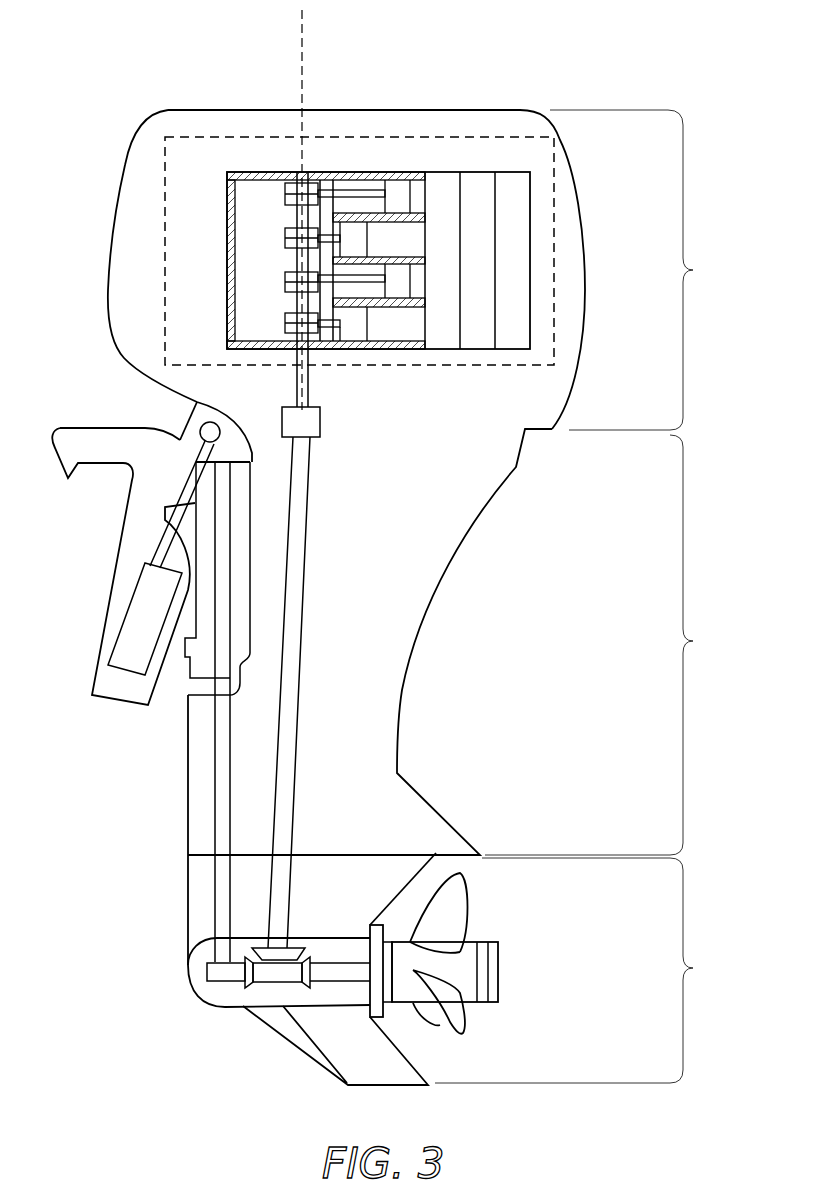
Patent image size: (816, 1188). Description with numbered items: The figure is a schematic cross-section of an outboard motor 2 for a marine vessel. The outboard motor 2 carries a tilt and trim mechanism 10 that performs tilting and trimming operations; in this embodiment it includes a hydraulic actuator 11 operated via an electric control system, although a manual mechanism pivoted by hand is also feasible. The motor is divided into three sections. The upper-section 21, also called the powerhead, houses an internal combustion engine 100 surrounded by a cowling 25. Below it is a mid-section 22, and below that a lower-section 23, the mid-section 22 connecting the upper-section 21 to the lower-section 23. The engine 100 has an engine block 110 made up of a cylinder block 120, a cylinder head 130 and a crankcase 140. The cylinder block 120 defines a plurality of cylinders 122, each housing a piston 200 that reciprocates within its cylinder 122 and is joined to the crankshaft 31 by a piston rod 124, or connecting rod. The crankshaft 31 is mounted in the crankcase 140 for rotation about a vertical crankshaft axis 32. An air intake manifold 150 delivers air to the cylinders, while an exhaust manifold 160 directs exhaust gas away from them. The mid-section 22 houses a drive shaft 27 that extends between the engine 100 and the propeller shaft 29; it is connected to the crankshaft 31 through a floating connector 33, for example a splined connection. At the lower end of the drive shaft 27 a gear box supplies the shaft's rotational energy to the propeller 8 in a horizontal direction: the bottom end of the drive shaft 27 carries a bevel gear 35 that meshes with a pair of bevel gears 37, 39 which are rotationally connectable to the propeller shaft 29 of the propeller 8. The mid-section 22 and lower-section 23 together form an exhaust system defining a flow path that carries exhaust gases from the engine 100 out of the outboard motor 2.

The outboard motor 2 is at (155, 82).
The propeller 8 is at (467, 972).
The tilt and trim mechanism 10 is at (103, 561).
The hydraulic actuator 11 is at (132, 645).
The upper-section 21 is at (416, 270).
The mid-section 22 is at (456, 642).
The lower-section 23 is at (456, 890).
The cowling 25 is at (582, 192).
The drive shaft 27 is at (303, 590).
The propeller shaft 29 is at (337, 976).
The crankshaft 31 is at (303, 390).
The vertical crankshaft axis 32 is at (303, 20).
The floating connector 33 is at (320, 420).
The bevel gear 35 is at (275, 955).
The bevel gear 37 is at (252, 978).
The bevel gear 39 is at (308, 972).
The internal combustion engine 100 is at (165, 165).
The engine block 110 is at (404, 152).
The cylinder block 120 is at (400, 347).
The cylinder 122 is at (416, 337).
The piston rod 124 is at (340, 197).
The cylinder head 130 is at (443, 183).
The crankcase 140 is at (247, 175).
The air intake manifold 150 is at (482, 337).
The exhaust manifold 160 is at (515, 313).
The piston 200 is at (357, 232).